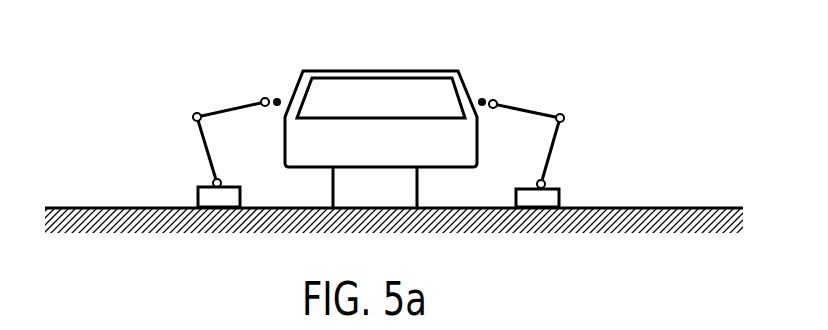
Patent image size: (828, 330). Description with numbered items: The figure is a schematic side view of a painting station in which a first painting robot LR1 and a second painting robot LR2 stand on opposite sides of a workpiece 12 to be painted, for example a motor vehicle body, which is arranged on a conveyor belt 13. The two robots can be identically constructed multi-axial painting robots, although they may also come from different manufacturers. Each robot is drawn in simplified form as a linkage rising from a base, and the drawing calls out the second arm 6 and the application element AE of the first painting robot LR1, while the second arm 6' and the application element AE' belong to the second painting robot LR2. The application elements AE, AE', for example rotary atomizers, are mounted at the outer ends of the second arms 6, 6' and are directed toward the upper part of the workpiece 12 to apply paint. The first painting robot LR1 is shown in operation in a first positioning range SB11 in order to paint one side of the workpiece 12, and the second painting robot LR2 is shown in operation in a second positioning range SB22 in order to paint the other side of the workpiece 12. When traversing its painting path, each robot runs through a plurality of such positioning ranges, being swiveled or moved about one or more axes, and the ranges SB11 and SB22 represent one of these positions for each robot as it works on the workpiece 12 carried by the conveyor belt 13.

The first painting robot LR1 is at (179, 116).
The second painting robot LR2 is at (557, 110).
The second arm 6 is at (228, 122).
The second arm 6' is at (529, 125).
The application element AE is at (264, 72).
The application element AE' is at (496, 72).
The workpiece 12 is at (382, 70).
The conveyor belt 13 is at (417, 187).
The first positioning range SB11 is at (185, 180).
The second positioning range SB22 is at (573, 179).